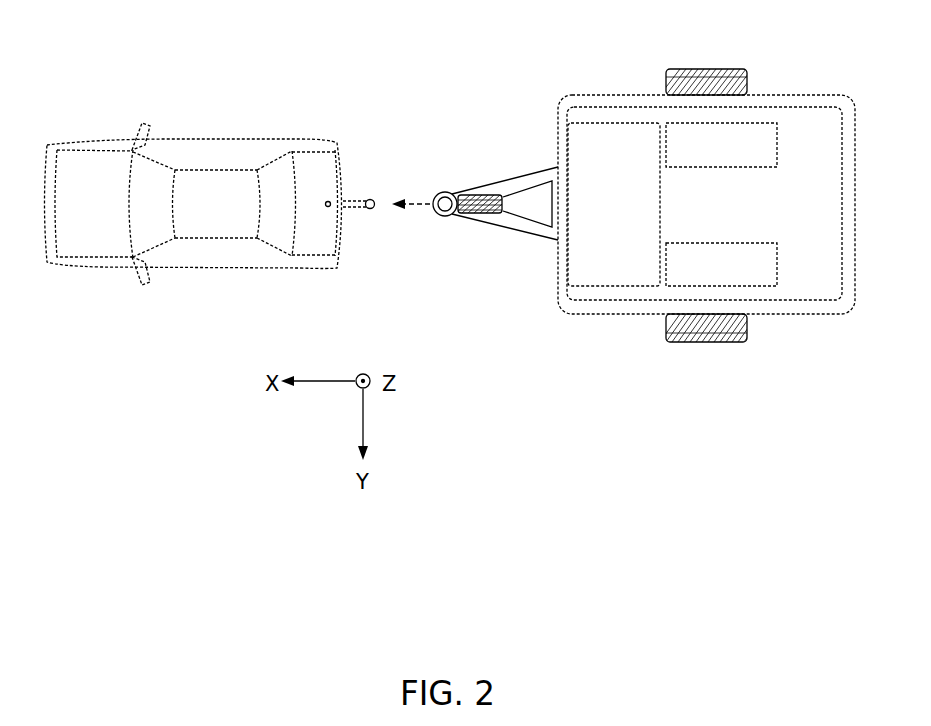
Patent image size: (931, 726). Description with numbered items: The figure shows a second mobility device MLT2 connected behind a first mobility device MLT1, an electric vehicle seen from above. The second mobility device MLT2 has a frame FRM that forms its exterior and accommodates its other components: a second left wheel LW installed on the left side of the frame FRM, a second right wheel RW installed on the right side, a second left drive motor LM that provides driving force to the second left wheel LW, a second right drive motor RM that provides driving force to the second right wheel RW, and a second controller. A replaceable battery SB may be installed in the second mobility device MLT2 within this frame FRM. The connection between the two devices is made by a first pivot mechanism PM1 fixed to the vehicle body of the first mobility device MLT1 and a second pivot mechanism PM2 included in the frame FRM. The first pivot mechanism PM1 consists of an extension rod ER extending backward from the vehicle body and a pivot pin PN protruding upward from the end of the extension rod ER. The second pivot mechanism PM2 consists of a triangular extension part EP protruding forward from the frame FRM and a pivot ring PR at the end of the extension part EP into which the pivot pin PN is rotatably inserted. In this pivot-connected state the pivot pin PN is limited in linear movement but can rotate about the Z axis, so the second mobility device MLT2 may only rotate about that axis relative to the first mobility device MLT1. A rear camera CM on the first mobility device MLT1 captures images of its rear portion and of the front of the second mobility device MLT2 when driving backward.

The first mobility device MLT1 is at (233, 127).
The first pivot mechanism PM1 is at (381, 136).
The extension rod ER is at (362, 198).
The pivot pin PN is at (374, 196).
The rear camera CM is at (330, 209).
The second pivot mechanism PM2 is at (495, 256).
The pivot ring PR is at (440, 217).
The extension part EP is at (523, 210).
The second mobility device MLT2 is at (706, 206).
The frame FRM is at (800, 94).
The replaceable battery SB is at (605, 106).
The second right drive motor RM is at (721, 145).
The second left drive motor LM is at (721, 264).
The second right wheel RW is at (712, 68).
The second left wheel LW is at (712, 343).